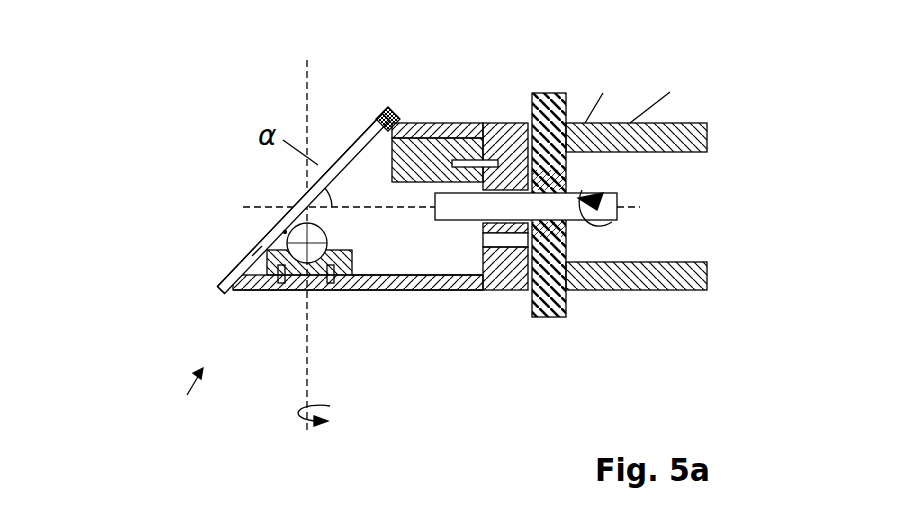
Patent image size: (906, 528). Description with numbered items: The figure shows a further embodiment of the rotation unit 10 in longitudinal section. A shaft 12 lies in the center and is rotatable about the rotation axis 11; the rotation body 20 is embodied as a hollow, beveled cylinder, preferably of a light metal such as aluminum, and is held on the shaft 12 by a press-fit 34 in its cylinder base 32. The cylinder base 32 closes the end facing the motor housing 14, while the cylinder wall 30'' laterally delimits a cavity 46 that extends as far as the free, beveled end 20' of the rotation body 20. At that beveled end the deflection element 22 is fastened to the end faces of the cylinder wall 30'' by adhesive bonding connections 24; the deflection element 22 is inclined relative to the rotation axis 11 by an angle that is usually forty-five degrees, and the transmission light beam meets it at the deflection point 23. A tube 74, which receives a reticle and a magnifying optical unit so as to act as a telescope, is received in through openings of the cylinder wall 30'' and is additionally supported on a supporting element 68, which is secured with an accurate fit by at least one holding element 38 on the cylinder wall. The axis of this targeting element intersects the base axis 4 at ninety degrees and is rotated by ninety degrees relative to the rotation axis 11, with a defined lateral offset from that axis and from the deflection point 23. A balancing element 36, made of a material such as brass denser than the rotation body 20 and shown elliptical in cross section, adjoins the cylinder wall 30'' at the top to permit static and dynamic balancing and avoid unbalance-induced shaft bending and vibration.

The base axis 4 is at (307, 372).
The rotation unit 10 is at (177, 401).
The rotation axis 11 is at (637, 205).
The shaft 12 is at (618, 212).
The motor housing 14 is at (669, 315).
The rotation body 20 is at (358, 337).
The free beveled end 20' is at (357, 96).
The deflection element 22 is at (353, 148).
The deflection point 23 is at (303, 203).
The adhesive bonding connections 24 is at (228, 290).
The cylinder wall 30'' is at (358, 327).
The cylinder base 32 is at (500, 122).
The press-fit 34 is at (508, 250).
The balancing element 36 is at (410, 122).
The holding element 38 is at (470, 122).
The cavity 46 is at (463, 263).
The supporting element 68 is at (283, 289).
The tube 74 is at (272, 242).